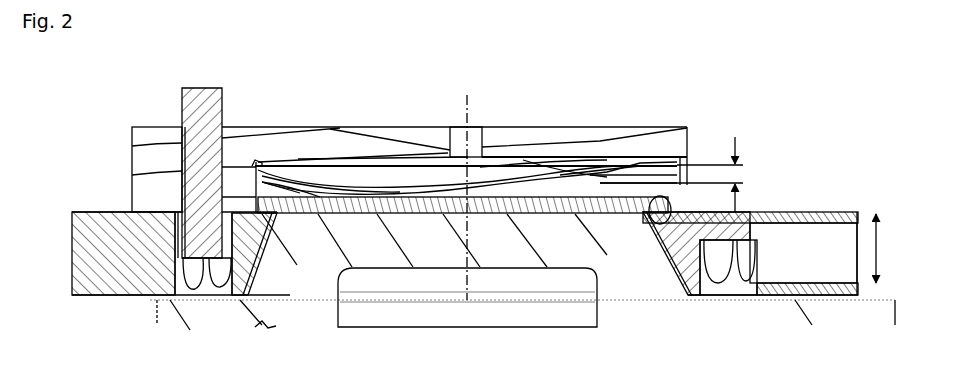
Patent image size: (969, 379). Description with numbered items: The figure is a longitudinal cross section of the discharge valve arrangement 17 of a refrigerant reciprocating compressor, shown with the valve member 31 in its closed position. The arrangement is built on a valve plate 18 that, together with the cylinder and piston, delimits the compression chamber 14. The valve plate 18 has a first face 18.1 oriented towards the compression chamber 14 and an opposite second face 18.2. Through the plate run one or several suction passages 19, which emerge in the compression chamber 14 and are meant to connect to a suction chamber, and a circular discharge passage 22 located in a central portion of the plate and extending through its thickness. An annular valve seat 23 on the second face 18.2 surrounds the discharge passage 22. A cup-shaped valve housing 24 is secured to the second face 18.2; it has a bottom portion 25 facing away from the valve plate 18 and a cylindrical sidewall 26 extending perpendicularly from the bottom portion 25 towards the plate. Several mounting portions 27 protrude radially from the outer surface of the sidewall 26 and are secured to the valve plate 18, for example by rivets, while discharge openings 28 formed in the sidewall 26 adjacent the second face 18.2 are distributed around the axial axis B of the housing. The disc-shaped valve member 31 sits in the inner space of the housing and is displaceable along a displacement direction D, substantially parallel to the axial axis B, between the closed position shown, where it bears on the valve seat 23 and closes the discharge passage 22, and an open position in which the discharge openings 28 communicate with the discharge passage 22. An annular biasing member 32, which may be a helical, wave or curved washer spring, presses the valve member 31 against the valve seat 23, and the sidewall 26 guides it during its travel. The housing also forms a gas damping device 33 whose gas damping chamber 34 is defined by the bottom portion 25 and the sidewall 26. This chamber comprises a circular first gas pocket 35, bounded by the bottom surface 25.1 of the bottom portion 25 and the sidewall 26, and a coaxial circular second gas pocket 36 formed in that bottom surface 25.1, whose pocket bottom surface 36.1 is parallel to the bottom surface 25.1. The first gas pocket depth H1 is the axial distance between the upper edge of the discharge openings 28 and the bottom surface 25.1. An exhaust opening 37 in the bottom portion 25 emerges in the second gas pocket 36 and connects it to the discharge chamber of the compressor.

The compression chamber 14 is at (722, 297).
The discharge valve arrangement 17 is at (712, 128).
The valve plate 18 is at (88, 210).
The first face 18.1 is at (124, 300).
The second face 18.2 is at (788, 207).
The suction passage 19 is at (812, 246).
The discharge passage 22 is at (668, 266).
The valve seat 23 is at (647, 213).
The valve housing 24 is at (566, 142).
The bottom portion 25 is at (285, 142).
The bottom surface 25.1 is at (317, 177).
The sidewall 26 is at (413, 173).
The mounting portion 27 is at (147, 162).
The discharge opening 28 is at (524, 163).
The valve member 31 is at (553, 200).
The biasing member 32 is at (628, 150).
The gas damping device 33 is at (592, 150).
The gas damping chamber 34 is at (322, 210).
The first gas pocket 35 is at (322, 215).
The second gas pocket 36 is at (387, 157).
The pocket bottom surface 36.1 is at (566, 173).
The exhaust opening 37 is at (470, 130).
The axial axis B is at (466, 107).
The first gas pocket depth H1 is at (722, 174).
The displacement direction D is at (886, 248).